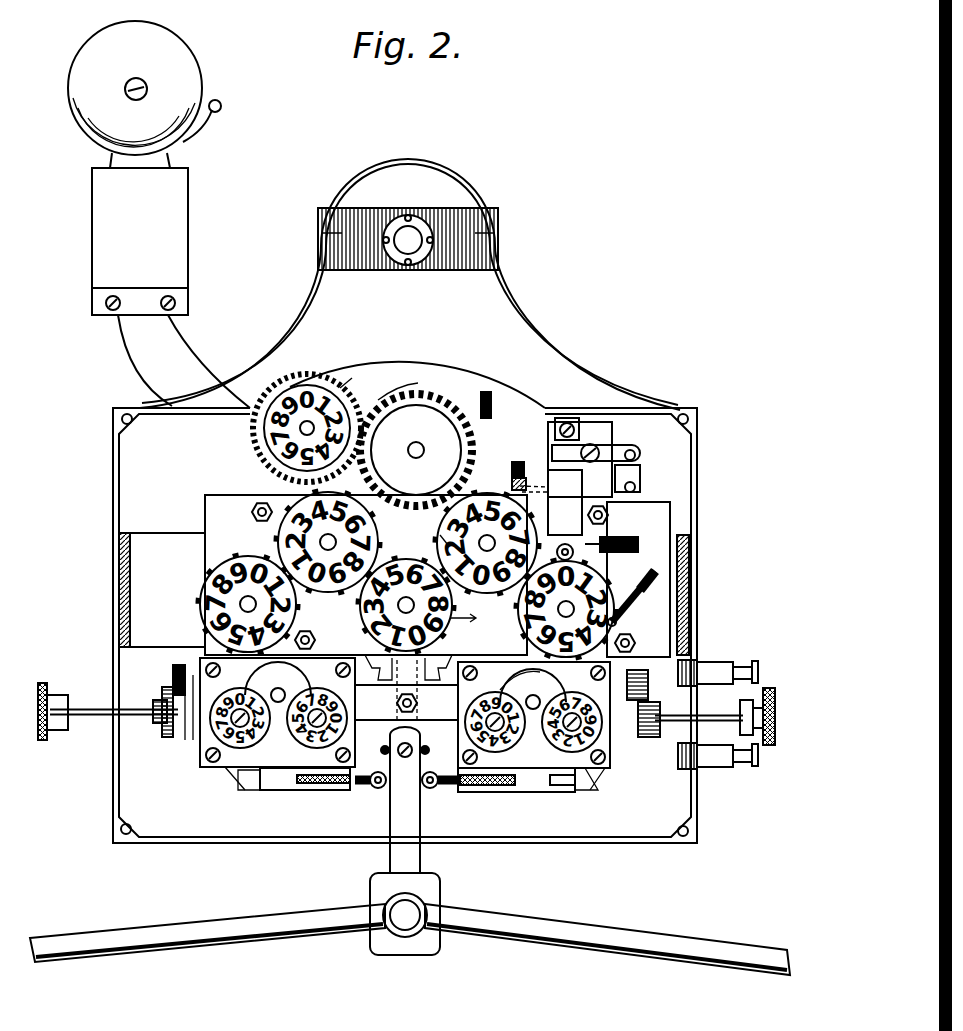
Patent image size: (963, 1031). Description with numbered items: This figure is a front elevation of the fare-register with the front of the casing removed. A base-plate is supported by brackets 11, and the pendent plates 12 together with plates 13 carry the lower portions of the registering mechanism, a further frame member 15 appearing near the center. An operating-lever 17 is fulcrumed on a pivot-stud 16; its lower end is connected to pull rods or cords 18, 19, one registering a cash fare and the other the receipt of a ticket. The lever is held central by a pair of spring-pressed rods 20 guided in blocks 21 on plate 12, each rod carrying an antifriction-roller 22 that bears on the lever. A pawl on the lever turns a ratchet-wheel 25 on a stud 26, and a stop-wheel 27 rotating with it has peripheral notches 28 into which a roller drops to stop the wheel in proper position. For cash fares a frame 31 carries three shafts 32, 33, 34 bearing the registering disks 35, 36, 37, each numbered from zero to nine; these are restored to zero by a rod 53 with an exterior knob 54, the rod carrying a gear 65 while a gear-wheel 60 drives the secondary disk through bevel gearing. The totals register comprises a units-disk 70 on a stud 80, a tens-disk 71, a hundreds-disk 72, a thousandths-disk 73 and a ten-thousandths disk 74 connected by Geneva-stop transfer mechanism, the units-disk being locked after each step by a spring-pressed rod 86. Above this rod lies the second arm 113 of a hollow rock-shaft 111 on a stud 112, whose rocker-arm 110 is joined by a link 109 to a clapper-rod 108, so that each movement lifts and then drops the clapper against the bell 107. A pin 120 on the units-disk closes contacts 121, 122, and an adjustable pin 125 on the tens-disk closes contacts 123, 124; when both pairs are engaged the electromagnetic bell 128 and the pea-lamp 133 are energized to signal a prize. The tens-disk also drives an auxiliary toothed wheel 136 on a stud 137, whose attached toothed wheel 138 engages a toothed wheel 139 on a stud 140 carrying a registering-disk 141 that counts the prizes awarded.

The electromagnetic bell 128 is at (172, 192).
The pea-lamp 133 is at (405, 238).
The registering-disk 141 is at (297, 392).
The stud 140 is at (300, 428).
The toothed wheel 139 is at (328, 378).
The toothed wheel 138 is at (432, 400).
The auxiliary toothed wheel 136 is at (416, 444).
The stud 137 is at (416, 453).
The pendent plates 12 is at (222, 497).
The plates 13 is at (278, 495).
The brackets 11 is at (162, 590).
The ten-thousandths disk 74 is at (262, 558).
The thousandths-disk 73 is at (380, 566).
The hundreds-disk 72 is at (360, 606).
The tens-disk 71 is at (490, 600).
The units-disk 70 is at (594, 580).
The pin 125 is at (440, 535).
The stud 26 is at (368, 654).
The stud 80 is at (480, 619).
The ratchet-wheel 25 is at (455, 662).
The stop-wheel 27 is at (490, 662).
The second arm 113 is at (566, 418).
The rocker-arm 110 is at (612, 450).
The hollow rock-shaft 111 is at (588, 448).
The stud 112 is at (593, 452).
The link 109 is at (636, 472).
The contact 124 is at (553, 530).
The clapper-rod 108 is at (610, 515).
The contact 123 is at (614, 538).
The bell 107 is at (515, 470).
The spring-pressed rod 86 is at (522, 478).
The pin 120 is at (630, 606).
The second contact 122 is at (626, 624).
The contact 121 is at (636, 645).
The frame 31 is at (232, 780).
The shaft 34 is at (488, 742).
The shaft 32 is at (572, 732).
The shaft 33 is at (534, 710).
The registering disk 36 is at (549, 680).
The peripheral notches 28 is at (466, 678).
The bar 15 is at (418, 704).
The pivot-stud 16 is at (398, 704).
The antifriction-roller 22 is at (390, 778).
The spring-pressed rods 20 is at (378, 790).
The boxes or blocks 21 is at (282, 790).
The registering disk 37 is at (478, 786).
The units-disk 35 is at (585, 782).
The rod 53 is at (96, 716).
The knob 54 is at (58, 692).
The gear-wheel 60 is at (640, 676).
The gear 65 is at (651, 737).
The operating-lever 17 is at (425, 882).
The pull rod or cord 19 is at (250, 925).
The pull rod or cord 18 is at (558, 925).